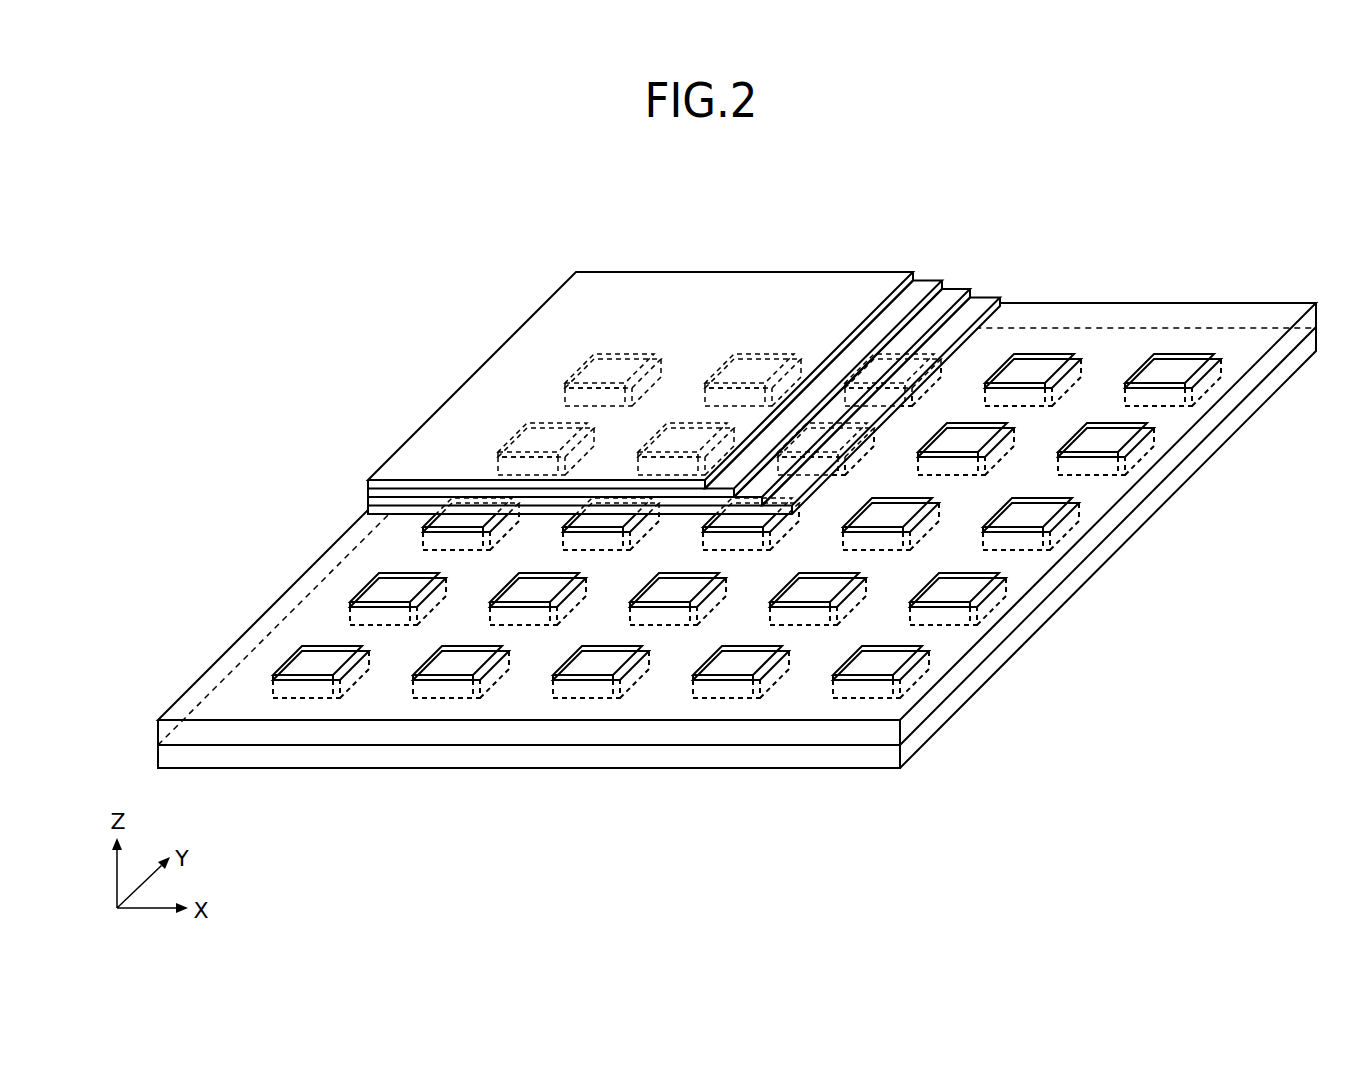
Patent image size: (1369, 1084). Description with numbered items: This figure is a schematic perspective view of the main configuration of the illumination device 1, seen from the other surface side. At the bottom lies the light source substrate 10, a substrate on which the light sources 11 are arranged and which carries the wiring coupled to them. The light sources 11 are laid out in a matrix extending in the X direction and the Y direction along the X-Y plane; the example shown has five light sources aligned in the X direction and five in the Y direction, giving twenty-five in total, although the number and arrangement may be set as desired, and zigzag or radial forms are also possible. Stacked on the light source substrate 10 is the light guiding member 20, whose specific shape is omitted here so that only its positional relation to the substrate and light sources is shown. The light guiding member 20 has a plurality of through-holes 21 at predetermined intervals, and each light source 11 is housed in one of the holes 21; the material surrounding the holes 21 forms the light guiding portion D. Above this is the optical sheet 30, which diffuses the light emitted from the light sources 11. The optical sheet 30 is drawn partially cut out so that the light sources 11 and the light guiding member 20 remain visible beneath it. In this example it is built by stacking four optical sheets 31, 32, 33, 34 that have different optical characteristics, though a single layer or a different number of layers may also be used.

The illumination device 1 is at (699, 493).
The light source substrate 10 is at (153, 758).
The light sources 11 is at (420, 660).
The light guiding member 20 is at (153, 733).
The holes 21 is at (1187, 353).
The optical sheet 30 is at (700, 335).
The optical sheet 31 is at (853, 212).
The optical sheet 32 is at (962, 288).
The optical sheet 33 is at (933, 280).
The optical sheet 34 is at (886, 270).
The light guiding portion D is at (1094, 362).